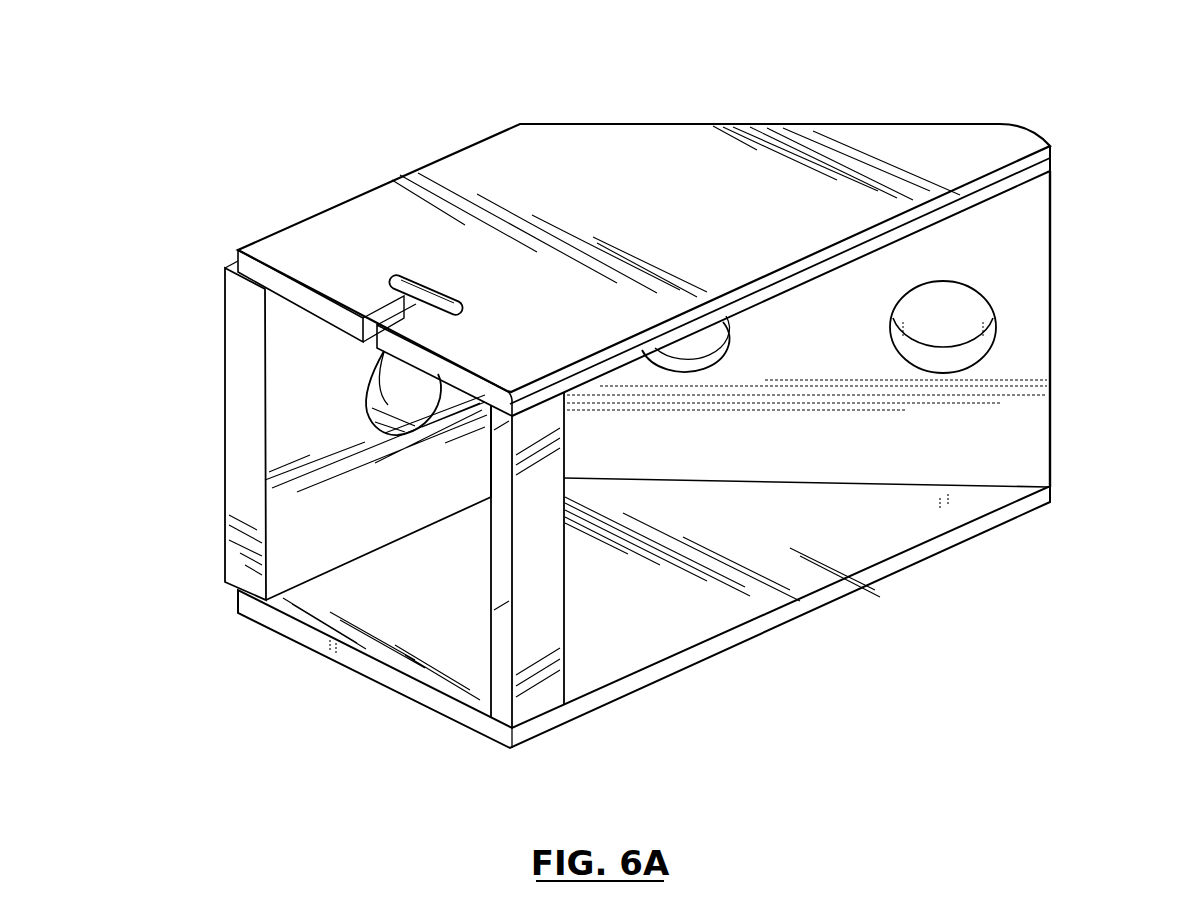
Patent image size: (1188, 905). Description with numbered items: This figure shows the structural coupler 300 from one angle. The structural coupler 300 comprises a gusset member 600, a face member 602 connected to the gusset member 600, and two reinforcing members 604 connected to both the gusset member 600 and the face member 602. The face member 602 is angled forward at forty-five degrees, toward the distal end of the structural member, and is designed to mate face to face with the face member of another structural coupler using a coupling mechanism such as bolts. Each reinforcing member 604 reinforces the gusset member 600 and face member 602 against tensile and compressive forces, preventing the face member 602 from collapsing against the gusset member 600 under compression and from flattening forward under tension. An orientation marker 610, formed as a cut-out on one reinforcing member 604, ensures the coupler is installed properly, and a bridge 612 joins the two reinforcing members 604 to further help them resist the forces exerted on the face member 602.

The structural coupler 300 is at (671, 405).
The gusset member 600 is at (330, 522).
The face member 602 is at (819, 445).
The reinforcing member 604 is at (631, 229).
The orientation marker 610 is at (381, 298).
The bridge 612 is at (540, 652).